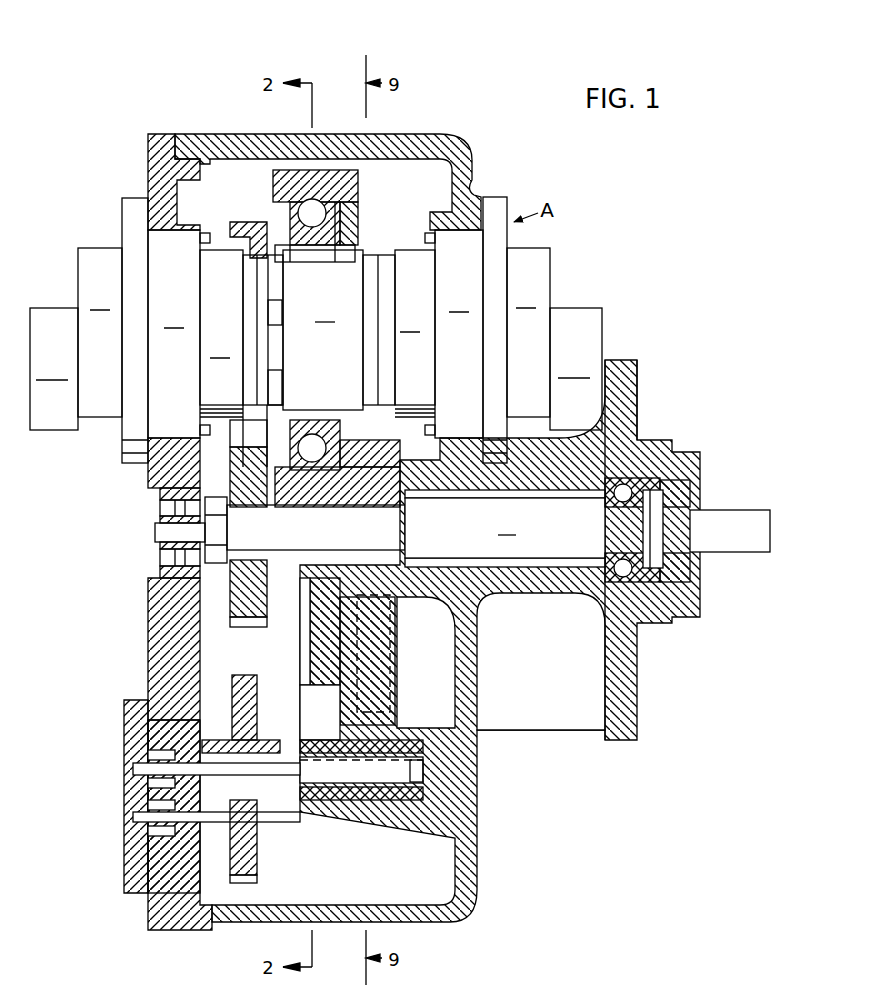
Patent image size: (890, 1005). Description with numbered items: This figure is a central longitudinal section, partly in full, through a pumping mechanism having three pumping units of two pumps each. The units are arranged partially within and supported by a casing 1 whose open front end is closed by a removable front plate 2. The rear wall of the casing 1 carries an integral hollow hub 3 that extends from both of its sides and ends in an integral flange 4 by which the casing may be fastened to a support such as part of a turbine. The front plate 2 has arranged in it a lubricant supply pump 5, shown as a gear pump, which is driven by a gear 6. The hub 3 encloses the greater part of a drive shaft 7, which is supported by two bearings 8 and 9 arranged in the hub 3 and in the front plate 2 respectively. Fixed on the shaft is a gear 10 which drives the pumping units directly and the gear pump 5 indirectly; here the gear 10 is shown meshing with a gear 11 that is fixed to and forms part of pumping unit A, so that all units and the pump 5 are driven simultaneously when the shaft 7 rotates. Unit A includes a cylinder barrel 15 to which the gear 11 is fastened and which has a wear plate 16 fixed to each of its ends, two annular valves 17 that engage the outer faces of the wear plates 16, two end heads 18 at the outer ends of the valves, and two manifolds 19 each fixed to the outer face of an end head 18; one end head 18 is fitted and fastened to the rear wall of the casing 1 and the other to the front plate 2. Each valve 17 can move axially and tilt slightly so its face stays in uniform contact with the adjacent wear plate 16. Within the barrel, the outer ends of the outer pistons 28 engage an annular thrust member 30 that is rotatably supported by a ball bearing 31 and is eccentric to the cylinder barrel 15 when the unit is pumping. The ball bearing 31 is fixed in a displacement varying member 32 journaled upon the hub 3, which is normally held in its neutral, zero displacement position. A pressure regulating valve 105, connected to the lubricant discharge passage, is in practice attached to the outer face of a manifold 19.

The casing 1 is at (462, 160).
The front plate 2 is at (148, 158).
The hollow hub 3 is at (560, 590).
The flange 4 is at (632, 692).
The lubricant supply pump 5 is at (140, 790).
The gear 6 is at (245, 855).
The drive shaft 7 is at (487, 530).
The bearing 8 is at (608, 503).
The bearing 9 is at (165, 562).
The gear 10 is at (244, 622).
The gear 11 is at (262, 222).
The cylinder barrel 15 is at (315, 330).
The wear plate 16 is at (385, 364).
The annular valve 17 is at (317, 333).
The end head 18 is at (315, 334).
The manifold 19 is at (314, 332).
The outer piston 28 is at (342, 250).
The annular thrust member 30 is at (342, 231).
The ball bearing 31 is at (322, 214).
The displacement varying member 32 is at (350, 190).
The pressure regulating valve 105 is at (316, 369).